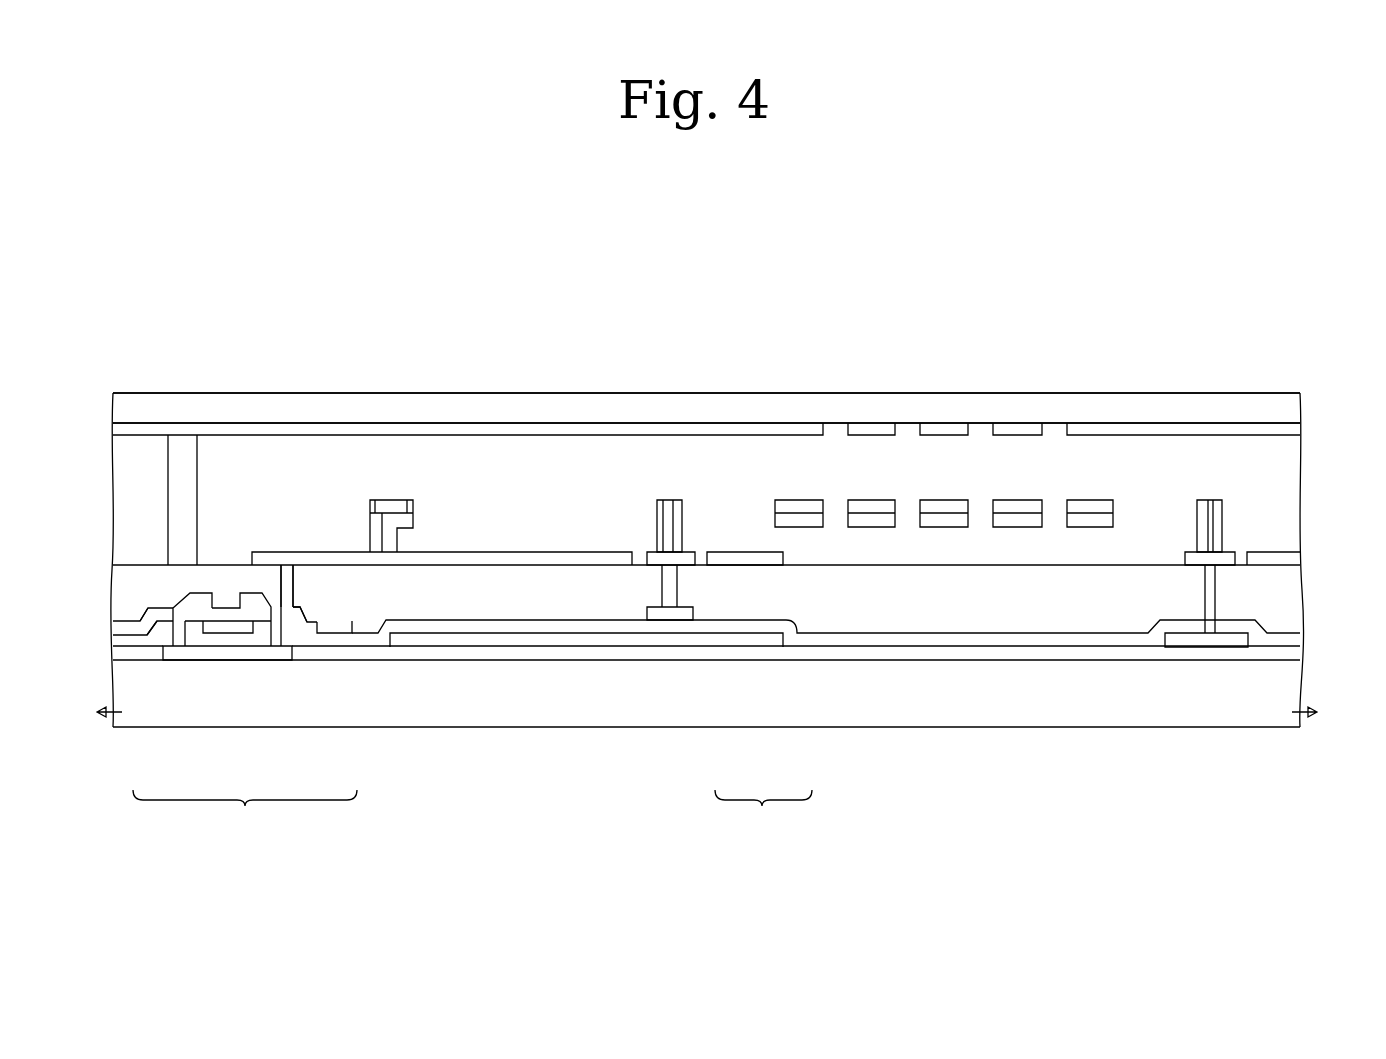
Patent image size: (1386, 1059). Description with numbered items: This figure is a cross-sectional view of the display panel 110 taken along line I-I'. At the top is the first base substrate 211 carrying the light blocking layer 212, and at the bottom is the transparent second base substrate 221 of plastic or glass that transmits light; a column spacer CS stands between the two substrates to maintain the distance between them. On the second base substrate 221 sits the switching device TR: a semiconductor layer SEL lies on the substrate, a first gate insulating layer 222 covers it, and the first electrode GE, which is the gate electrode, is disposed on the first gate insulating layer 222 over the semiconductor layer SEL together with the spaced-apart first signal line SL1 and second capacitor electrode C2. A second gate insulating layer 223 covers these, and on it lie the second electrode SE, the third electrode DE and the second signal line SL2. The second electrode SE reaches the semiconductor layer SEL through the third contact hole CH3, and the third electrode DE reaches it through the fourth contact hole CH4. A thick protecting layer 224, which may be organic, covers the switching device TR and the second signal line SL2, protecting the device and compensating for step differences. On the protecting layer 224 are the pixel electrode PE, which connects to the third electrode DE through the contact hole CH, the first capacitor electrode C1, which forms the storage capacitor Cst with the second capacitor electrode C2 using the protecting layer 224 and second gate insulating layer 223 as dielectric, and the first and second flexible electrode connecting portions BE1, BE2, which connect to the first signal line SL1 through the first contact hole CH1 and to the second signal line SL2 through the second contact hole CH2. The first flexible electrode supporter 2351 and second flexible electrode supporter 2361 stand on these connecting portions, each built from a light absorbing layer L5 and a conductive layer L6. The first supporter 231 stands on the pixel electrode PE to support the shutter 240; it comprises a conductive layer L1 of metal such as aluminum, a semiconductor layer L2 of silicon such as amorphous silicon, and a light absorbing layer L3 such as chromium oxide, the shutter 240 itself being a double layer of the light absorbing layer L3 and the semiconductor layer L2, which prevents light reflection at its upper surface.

The display panel 110 is at (1060, 299).
The first base substrate 211 is at (113, 410).
The light blocking layer 212 is at (113, 432).
The column spacer CS is at (175, 493).
The protecting layer 224 is at (113, 588).
The second gate insulating layer 223 is at (113, 640).
The first gate insulating layer 222 is at (113, 655).
The second base substrate 221 is at (113, 690).
The second electrode SE is at (199, 612).
The first electrode GE is at (223, 630).
The semiconductor layer SEL is at (252, 655).
The third electrode DE is at (276, 640).
The second signal line SL2 is at (333, 628).
The switching device TR is at (245, 811).
The third contact hole CH3 is at (143, 612).
The contact hole CH is at (277, 590).
The fourth contact hole CH4 is at (318, 603).
The pixel electrode PE is at (483, 550).
The second contact hole CH2 is at (657, 580).
The first contact hole CH1 is at (1200, 588).
The first capacitor electrode C1 is at (722, 568).
The second capacitor electrode C2 is at (768, 640).
The storage capacitor Cst is at (763, 811).
The first signal line SL1 is at (1210, 648).
The first supporter 231 is at (448, 325).
The conductive layer L1 is at (376, 503).
The semiconductor layer L2 is at (405, 503).
The light absorbing layer L3 is at (394, 503).
The second flexible electrode supporter 2361 is at (743, 325).
The light absorbing layer L5 is at (660, 503).
The conductive layer L6 is at (669, 503).
The second flexible electrode connecting portion BE2 is at (688, 558).
The shutter 240 is at (890, 325).
The first flexible electrode supporter 2351 is at (1282, 325).
The first flexible electrode connecting portion BE1 is at (1228, 558).